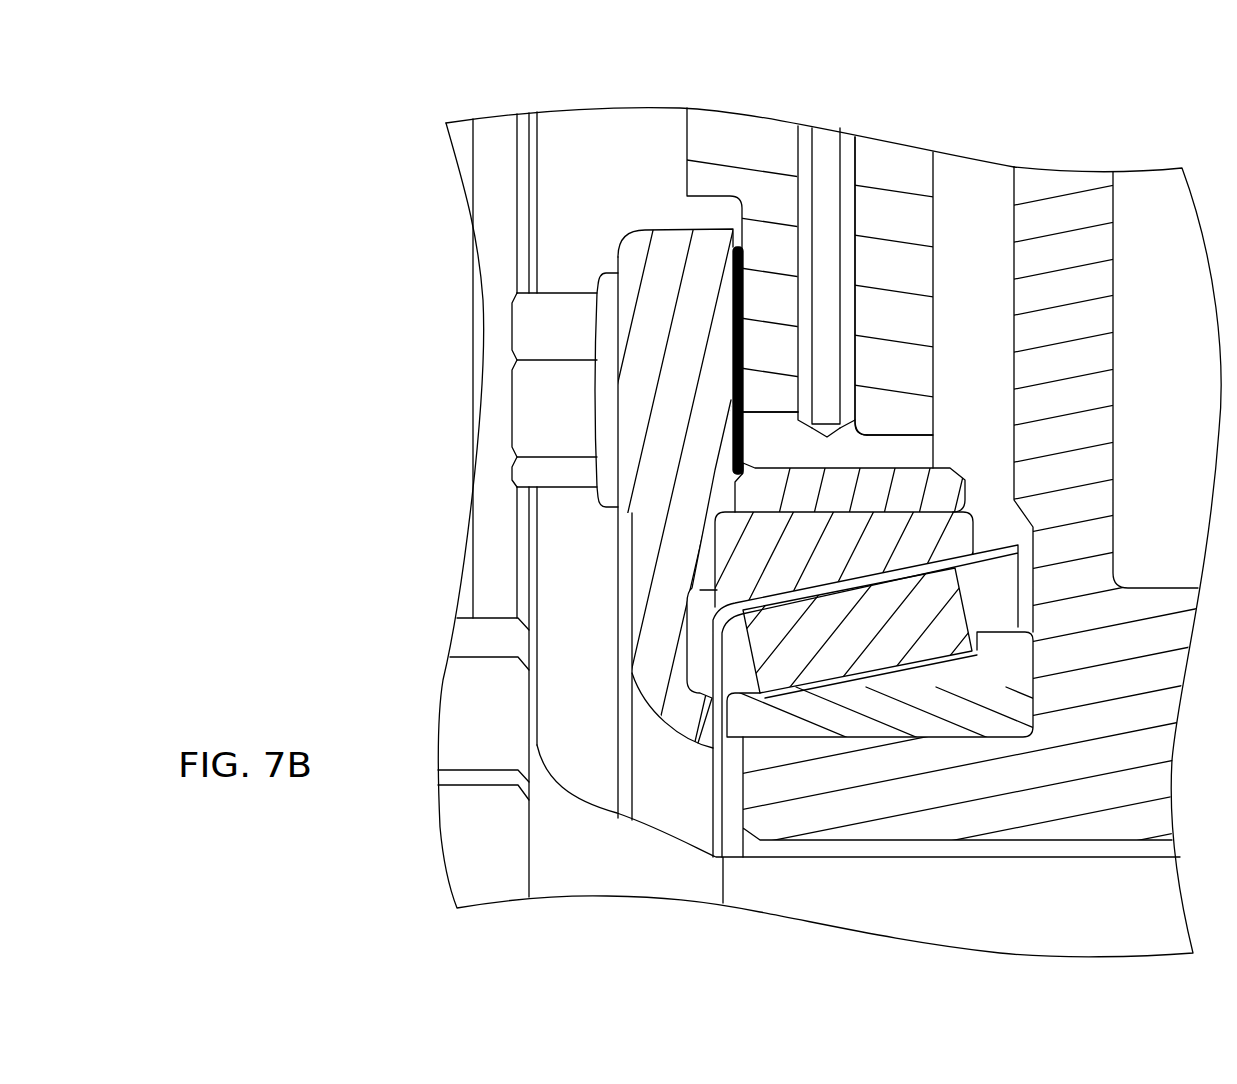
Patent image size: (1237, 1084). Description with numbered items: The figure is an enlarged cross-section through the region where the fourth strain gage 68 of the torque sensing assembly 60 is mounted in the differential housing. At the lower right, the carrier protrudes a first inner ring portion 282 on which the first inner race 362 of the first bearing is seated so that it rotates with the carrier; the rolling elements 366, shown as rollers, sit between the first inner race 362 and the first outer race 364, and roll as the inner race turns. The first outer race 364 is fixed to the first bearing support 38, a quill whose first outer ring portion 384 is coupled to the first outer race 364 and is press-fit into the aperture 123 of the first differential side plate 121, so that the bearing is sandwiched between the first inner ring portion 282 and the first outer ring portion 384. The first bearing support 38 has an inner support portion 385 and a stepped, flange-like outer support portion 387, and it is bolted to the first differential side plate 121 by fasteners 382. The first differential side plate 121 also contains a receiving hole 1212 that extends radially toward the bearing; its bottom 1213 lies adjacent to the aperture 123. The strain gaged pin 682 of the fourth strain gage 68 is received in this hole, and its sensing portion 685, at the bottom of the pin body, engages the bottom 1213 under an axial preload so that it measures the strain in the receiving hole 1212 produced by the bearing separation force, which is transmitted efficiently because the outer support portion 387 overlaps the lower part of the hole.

The torque sensing assembly 60 is at (878, 236).
The fourth strain gage 68 is at (878, 236).
The strain gaged pin 682 is at (833, 215).
The receiving hole 1212 is at (852, 229).
The first differential side plate 121 is at (776, 191).
The bottom of the receiving hole 1213 is at (856, 420).
The sensing portion 685 is at (873, 428).
The first outer ring portion 384 is at (880, 488).
The fasteners 382 is at (565, 329).
The first bearing support 38 is at (665, 415).
The outer support portion 387 is at (701, 301).
The aperture 123 is at (797, 470).
The inner support portion 385 is at (690, 563).
The first outer race 364 is at (793, 562).
The rolling elements 366 is at (879, 640).
The first inner race 362 is at (954, 721).
The first inner ring portion 282 is at (939, 803).